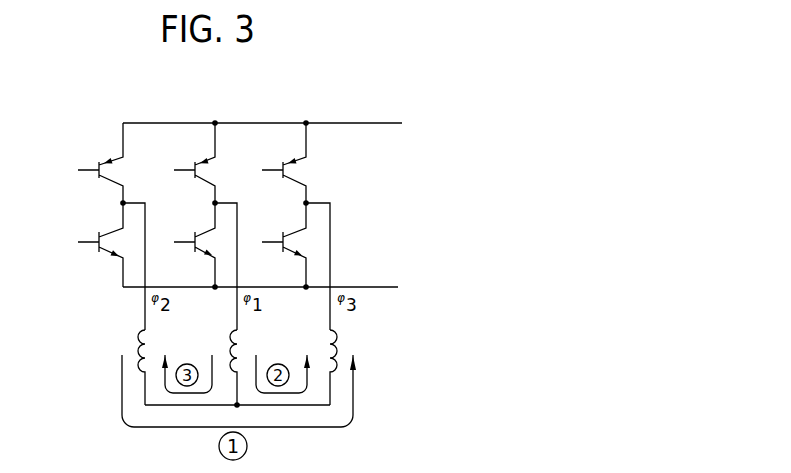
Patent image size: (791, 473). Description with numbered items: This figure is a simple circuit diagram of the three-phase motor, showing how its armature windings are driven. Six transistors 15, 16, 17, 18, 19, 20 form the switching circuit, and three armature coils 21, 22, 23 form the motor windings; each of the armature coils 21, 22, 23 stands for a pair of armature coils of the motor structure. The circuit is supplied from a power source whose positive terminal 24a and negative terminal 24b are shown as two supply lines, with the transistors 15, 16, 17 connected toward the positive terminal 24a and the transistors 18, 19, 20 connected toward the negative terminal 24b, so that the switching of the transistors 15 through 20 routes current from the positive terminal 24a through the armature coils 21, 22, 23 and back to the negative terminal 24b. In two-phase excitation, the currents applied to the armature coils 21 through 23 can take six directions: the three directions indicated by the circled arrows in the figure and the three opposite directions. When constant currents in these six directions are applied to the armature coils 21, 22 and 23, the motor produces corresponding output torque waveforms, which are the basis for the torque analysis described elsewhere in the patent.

The transistor 15 is at (83, 163).
The transistor 16 is at (182, 163).
The transistor 17 is at (275, 163).
The transistor 18 is at (83, 245).
The transistor 19 is at (186, 245).
The transistor 20 is at (275, 245).
The armature coil 21 is at (212, 359).
The armature coil 22 is at (120, 359).
The armature coil 23 is at (303, 359).
The positive terminal of the power source 24a is at (282, 123).
The negative terminal of the power source 24b is at (282, 287).